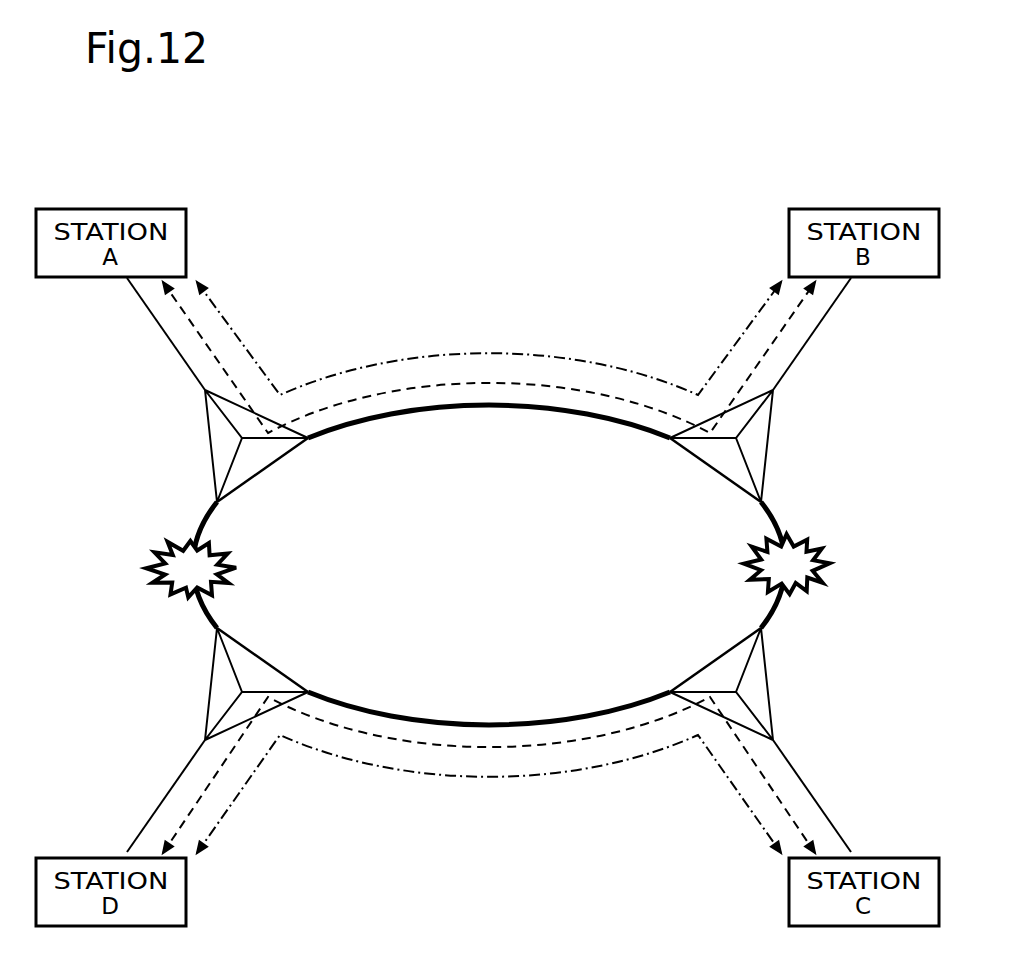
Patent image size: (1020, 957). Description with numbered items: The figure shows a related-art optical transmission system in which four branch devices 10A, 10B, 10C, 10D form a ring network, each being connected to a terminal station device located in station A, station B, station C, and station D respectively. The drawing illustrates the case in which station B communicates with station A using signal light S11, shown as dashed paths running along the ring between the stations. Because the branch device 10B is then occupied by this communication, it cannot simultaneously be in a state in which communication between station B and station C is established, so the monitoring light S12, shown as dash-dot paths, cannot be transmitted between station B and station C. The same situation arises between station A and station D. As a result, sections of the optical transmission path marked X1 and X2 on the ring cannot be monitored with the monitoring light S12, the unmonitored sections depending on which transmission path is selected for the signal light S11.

The branch device 10A is at (266, 472).
The branch device 10B is at (698, 462).
The branch device 10C is at (708, 664).
The branch device 10D is at (266, 661).
The signal light S11 is at (413, 384).
The monitoring light S12 is at (537, 352).
The section of the optical transmission path that cannot be monitored X1 is at (812, 549).
The section of the optical transmission path that cannot be monitored X2 is at (147, 565).